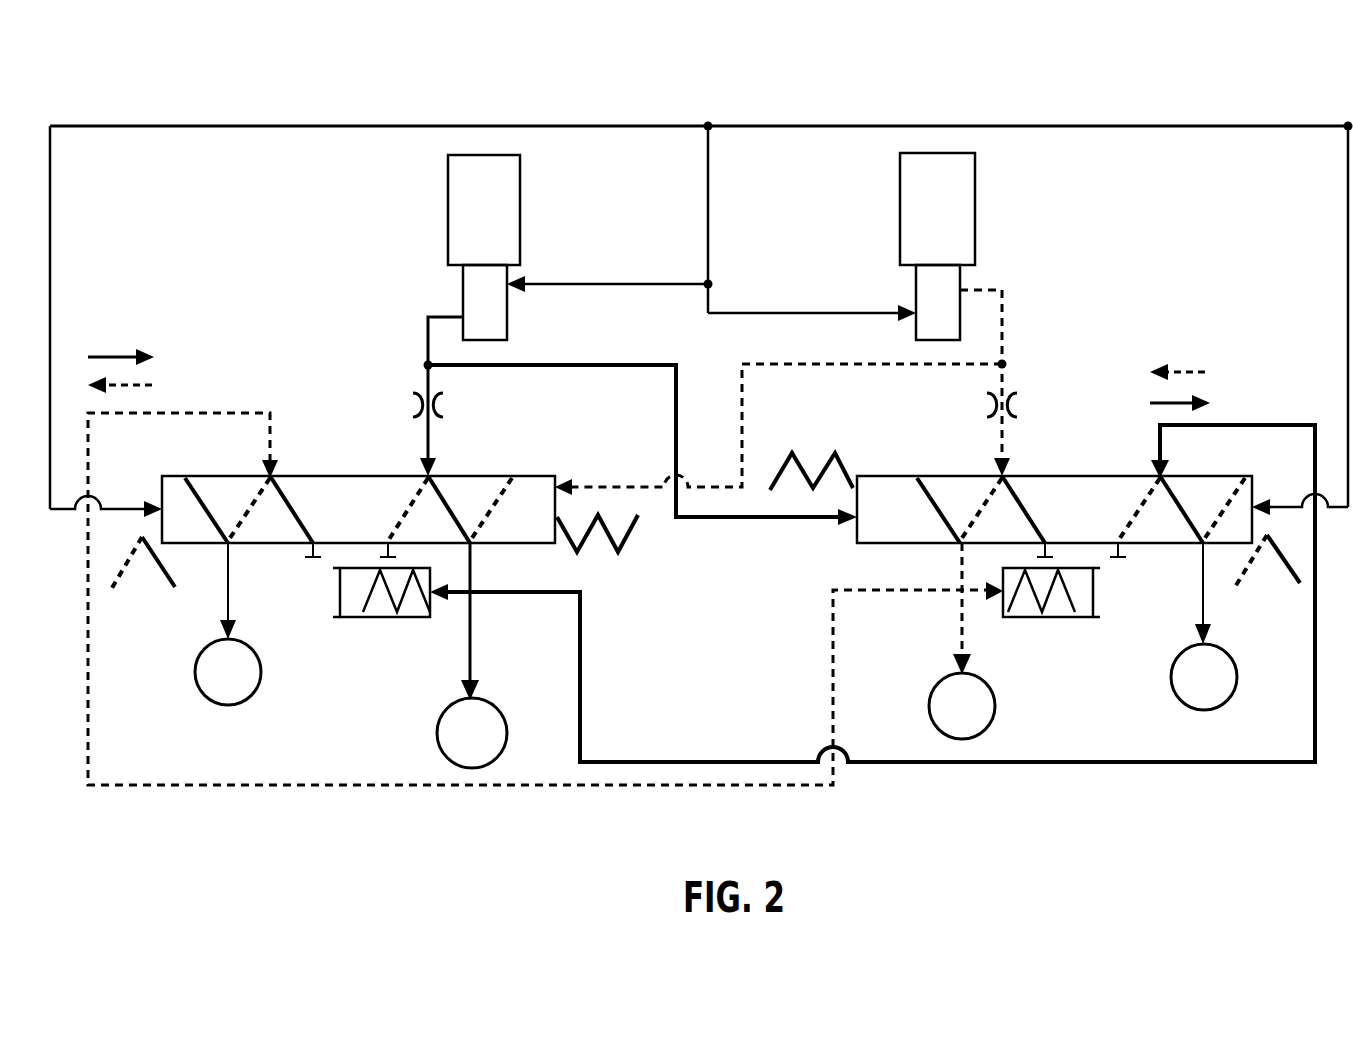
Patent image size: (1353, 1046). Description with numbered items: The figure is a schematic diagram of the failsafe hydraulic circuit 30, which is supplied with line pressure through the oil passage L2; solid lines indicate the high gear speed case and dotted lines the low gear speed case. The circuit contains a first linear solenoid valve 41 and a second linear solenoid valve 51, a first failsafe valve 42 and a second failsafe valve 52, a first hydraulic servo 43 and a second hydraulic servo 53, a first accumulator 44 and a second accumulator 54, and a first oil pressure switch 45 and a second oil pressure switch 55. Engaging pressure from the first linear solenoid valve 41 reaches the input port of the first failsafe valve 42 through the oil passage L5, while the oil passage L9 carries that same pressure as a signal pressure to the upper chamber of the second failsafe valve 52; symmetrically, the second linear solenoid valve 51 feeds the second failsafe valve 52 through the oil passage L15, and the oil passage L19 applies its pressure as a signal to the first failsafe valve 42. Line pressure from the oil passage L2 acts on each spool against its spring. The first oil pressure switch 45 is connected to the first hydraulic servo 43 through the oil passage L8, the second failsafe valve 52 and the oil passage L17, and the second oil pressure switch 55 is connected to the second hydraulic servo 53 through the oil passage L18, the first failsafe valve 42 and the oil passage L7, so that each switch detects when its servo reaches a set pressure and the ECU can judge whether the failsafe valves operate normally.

The failsafe hydraulic circuit 30 is at (776, 90).
The oil passage L2 is at (1125, 125).
The first linear solenoid valve 41 is at (522, 190).
The second linear solenoid valve 51 is at (977, 190).
The oil passage L5 is at (427, 343).
The oil passage L15 is at (1003, 340).
The oil passage L9 is at (582, 365).
The oil passage L19 is at (855, 363).
The first failsafe valve 42 is at (370, 476).
The second failsafe valve 52 is at (1048, 476).
The oil passage L7 is at (230, 590).
The oil passage L17 is at (1203, 597).
The second oil pressure switch 55 is at (262, 672).
The first oil pressure switch 45 is at (1171, 678).
The first accumulator 44 is at (395, 620).
The second accumulator 54 is at (1040, 620).
The first hydraulic servo 43 is at (437, 733).
The second hydraulic servo 53 is at (995, 706).
The oil passage L8 is at (583, 670).
The oil passage L18 is at (830, 673).